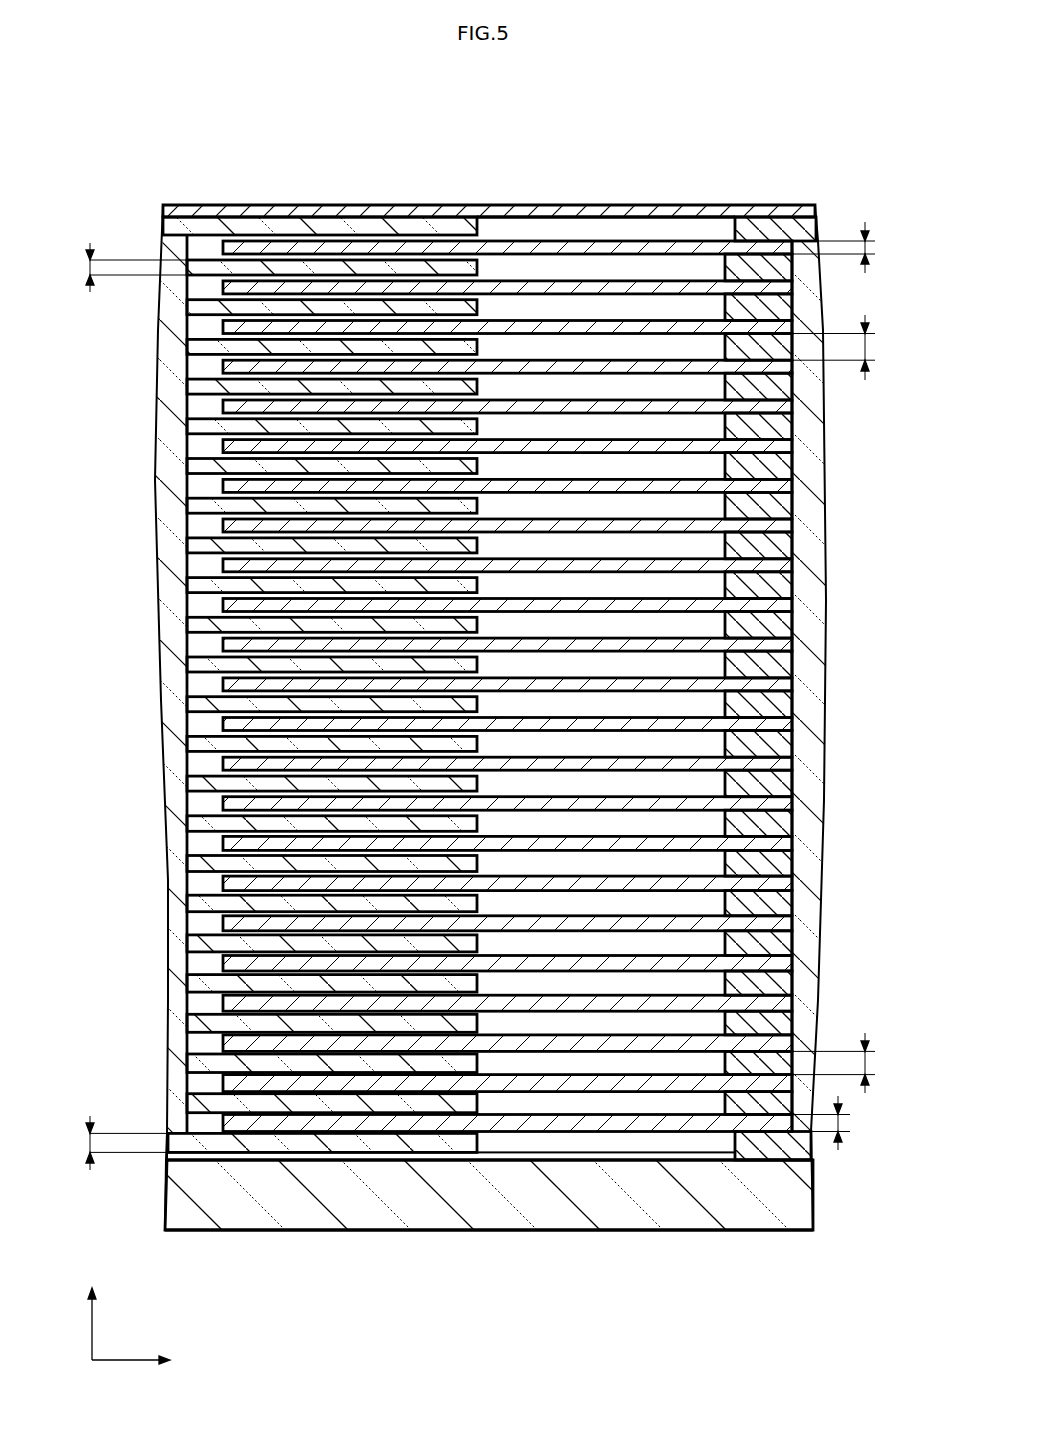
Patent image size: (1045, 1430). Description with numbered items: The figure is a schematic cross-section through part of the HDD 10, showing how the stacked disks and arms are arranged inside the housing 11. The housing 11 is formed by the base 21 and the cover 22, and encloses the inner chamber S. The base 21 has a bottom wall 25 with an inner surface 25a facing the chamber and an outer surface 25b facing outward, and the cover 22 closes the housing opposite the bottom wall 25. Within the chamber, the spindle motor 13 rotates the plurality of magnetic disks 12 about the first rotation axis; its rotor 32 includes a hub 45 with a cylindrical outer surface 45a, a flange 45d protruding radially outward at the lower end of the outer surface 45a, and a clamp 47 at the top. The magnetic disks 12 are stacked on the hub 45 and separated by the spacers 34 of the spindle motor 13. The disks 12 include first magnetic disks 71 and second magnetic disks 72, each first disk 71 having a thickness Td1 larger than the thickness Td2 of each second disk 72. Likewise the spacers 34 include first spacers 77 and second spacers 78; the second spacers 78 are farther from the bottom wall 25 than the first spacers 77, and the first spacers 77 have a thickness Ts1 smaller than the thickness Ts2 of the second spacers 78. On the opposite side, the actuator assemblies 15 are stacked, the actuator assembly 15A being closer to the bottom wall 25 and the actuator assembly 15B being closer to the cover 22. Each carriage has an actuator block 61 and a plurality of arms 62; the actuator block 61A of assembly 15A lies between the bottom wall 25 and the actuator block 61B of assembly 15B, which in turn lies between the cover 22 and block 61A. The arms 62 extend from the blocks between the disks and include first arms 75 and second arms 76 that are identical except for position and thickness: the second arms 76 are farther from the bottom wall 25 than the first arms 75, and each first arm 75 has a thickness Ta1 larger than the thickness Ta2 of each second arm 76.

The HDD 10 is at (146, 85).
The housing 11 is at (270, 207).
The cover 22 is at (522, 207).
The inner chamber S is at (690, 220).
The arms 62 is at (320, 739).
The second arms 76 is at (368, 268).
The first arms 75 is at (276, 1100).
The magnetic disks 12 is at (507, 711).
The second magnetic disks 72 is at (583, 280).
The first magnetic disks 71 is at (604, 1120).
The base 21 is at (489, 1226).
The bottom wall 25 is at (400, 1210).
The inner surface 25a is at (518, 1150).
The outer surface 25b is at (306, 1228).
The spindle motor 13 is at (504, 1249).
The rotor 32 is at (785, 1172).
The actuator assemblies 15 is at (113, 707).
The actuator assembly 15B is at (153, 218).
The actuator assembly 15A is at (160, 1002).
The actuator block 61 is at (116, 684).
The actuator block 61B is at (162, 370).
The actuator block 61A is at (175, 1070).
The hub 45 is at (805, 892).
The outer surface 45a is at (783, 648).
The clamp 47 is at (758, 225).
The flange 45d is at (762, 1145).
The spacers 34 is at (790, 800).
The second spacers 78 is at (781, 403).
The first spacers 77 is at (733, 1100).
The thickness of second arm Ta2 is at (115, 267).
The thickness of first arm Ta1 is at (105, 1143).
The thickness of second magnetic disk Td2 is at (854, 247).
The thickness of first magnetic disk Td1 is at (839, 1123).
The thickness of second spacers Ts2 is at (851, 347).
The thickness of first spacers Ts1 is at (851, 1063).